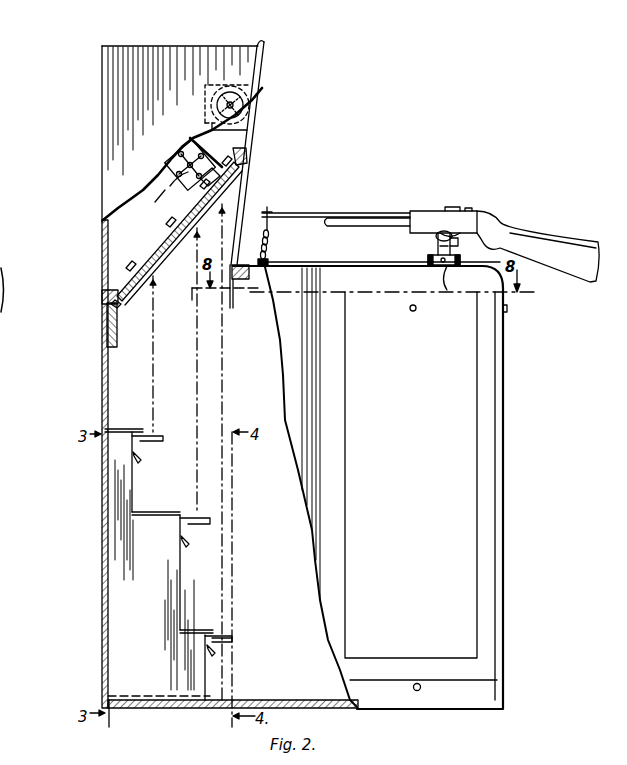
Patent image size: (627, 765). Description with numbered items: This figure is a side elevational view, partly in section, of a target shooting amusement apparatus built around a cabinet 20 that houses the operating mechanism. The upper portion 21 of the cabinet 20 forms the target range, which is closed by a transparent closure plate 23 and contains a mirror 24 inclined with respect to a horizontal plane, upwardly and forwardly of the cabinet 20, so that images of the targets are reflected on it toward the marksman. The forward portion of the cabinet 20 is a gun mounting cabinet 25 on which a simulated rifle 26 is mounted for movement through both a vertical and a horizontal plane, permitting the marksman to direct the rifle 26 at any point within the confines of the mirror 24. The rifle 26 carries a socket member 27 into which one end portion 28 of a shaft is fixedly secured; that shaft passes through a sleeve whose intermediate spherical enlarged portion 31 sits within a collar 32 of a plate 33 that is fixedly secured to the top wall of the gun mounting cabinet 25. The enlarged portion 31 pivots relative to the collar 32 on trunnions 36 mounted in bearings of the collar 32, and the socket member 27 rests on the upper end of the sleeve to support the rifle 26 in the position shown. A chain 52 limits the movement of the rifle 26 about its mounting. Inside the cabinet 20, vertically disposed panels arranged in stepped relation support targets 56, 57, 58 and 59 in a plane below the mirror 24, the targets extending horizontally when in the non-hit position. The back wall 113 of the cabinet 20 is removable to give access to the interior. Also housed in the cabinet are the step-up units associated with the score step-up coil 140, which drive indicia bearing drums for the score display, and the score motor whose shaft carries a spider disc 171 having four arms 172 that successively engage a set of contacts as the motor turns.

The cabinet 20 is at (100, 193).
The upper portion of the cabinet 21 is at (108, 110).
The transparent closure plate 23 is at (252, 113).
The mirror 24 is at (236, 185).
The gun mounting cabinet 25 is at (468, 376).
The simulated rifle 26 is at (527, 234).
The socket member 27 is at (436, 238).
The end portion of the shaft 28 is at (457, 243).
The spherical enlarged portion of the sleeve 31 is at (428, 258).
The collar 32 is at (450, 266).
The plate 33 is at (362, 266).
The trunnions 36 is at (433, 265).
The chain 52 is at (272, 236).
The target 56 is at (160, 436).
The target 57 is at (205, 522).
The target 58 is at (184, 598).
The target 59 is at (228, 638).
The back wall 113 is at (102, 576).
The score step-up coil 140 is at (198, 122).
The spider disc 171 is at (214, 143).
The arms 172 is at (186, 180).